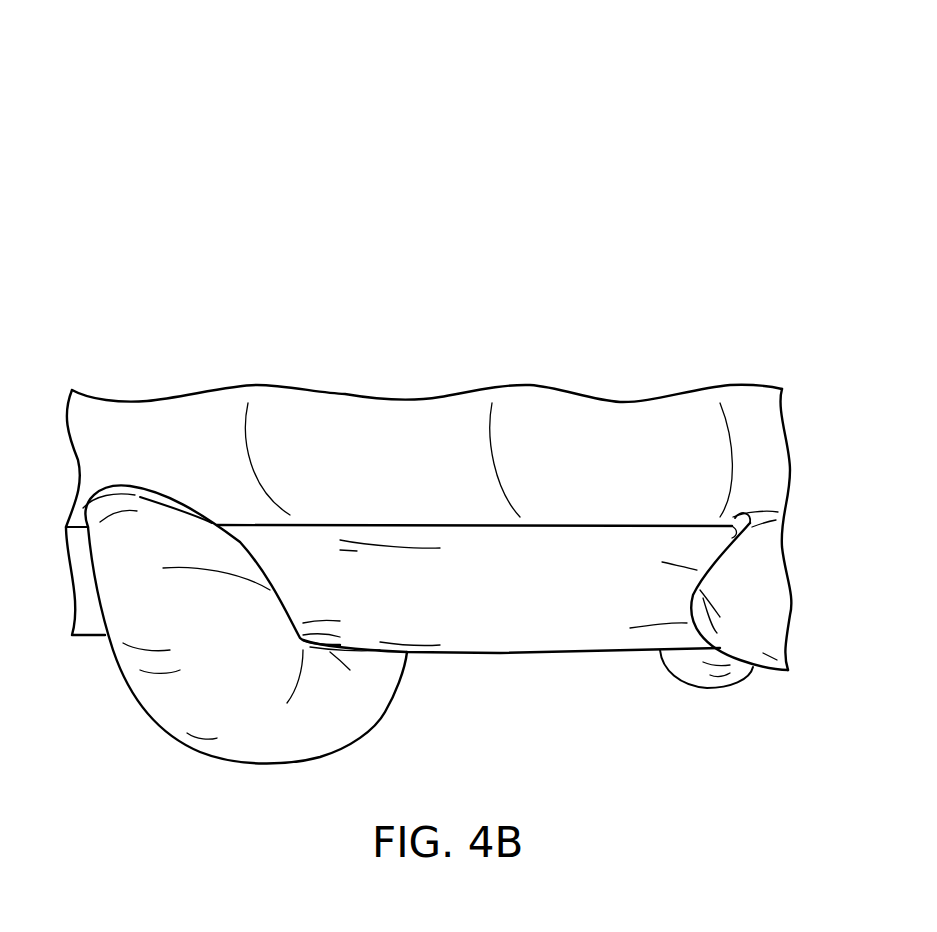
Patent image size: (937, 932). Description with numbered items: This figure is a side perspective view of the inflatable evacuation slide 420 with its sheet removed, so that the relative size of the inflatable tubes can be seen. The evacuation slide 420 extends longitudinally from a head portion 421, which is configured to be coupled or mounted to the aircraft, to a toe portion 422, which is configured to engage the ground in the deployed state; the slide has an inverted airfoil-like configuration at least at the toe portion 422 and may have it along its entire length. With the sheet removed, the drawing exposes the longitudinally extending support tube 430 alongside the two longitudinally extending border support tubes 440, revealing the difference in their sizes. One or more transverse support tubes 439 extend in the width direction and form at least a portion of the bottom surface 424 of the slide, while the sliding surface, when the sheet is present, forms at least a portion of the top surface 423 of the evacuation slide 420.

The evacuation slide 420 is at (182, 78).
The head portion 421 is at (32, 544).
The toe portion 422 is at (808, 536).
The top surface 423 is at (524, 282).
The bottom surface 424 is at (496, 766).
The longitudinally extending support tube 430 is at (508, 622).
The transverse support tubes 439 is at (270, 733).
The longitudinally extending border support tubes 440 is at (445, 432).